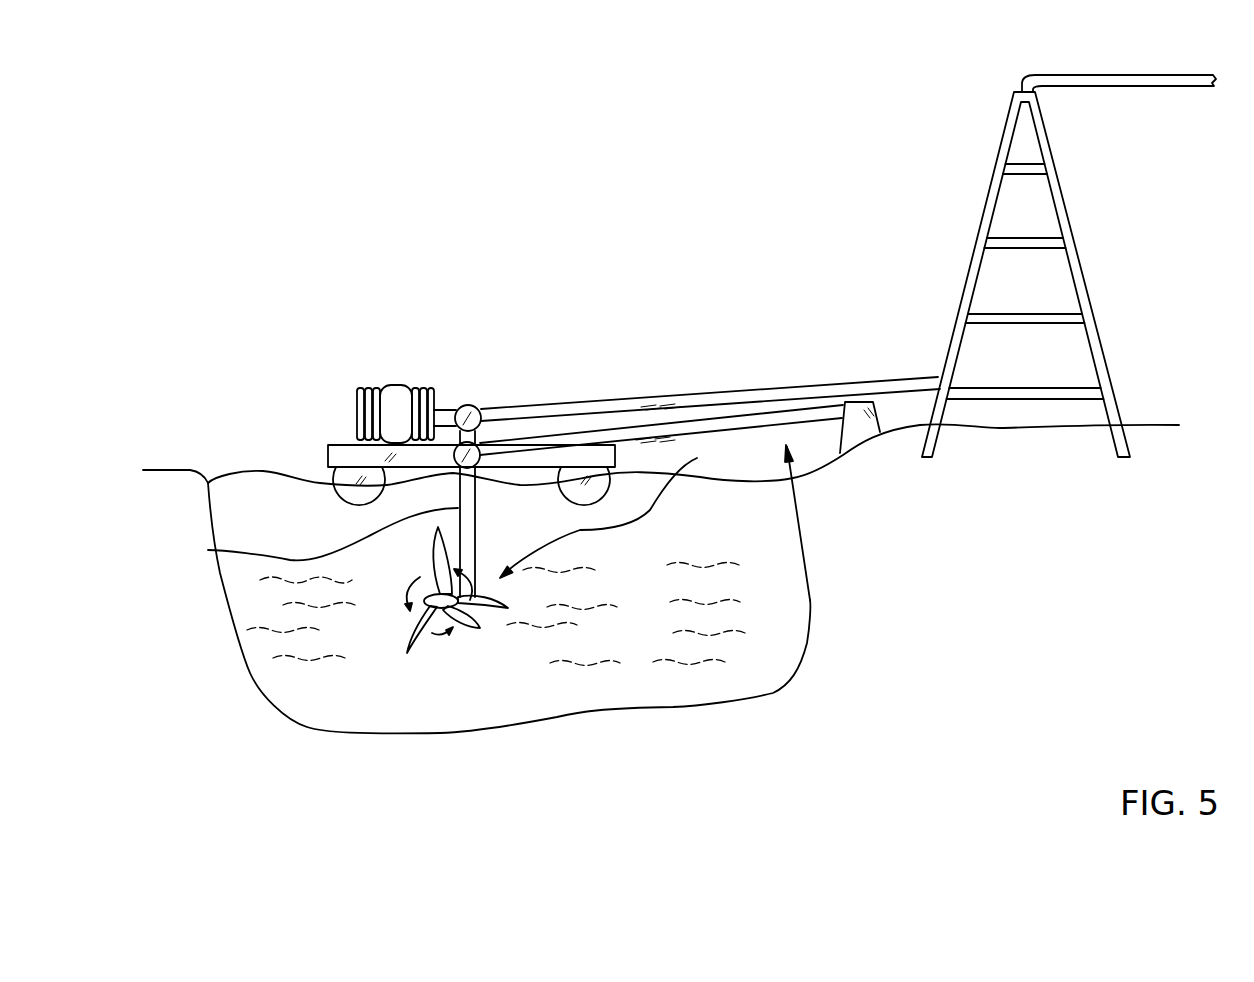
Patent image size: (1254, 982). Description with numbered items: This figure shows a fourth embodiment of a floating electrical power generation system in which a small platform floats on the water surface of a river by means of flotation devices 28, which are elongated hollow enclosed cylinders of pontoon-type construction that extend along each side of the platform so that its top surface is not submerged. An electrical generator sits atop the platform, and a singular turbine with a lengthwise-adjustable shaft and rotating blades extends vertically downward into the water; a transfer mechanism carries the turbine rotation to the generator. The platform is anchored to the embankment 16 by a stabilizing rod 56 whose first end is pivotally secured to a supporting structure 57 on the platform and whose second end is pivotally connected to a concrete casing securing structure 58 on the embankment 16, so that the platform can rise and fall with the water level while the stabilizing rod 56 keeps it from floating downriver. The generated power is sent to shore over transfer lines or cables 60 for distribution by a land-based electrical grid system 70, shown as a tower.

The embankment 16 is at (828, 465).
The flotation devices 28 is at (327, 482).
The stabilizing rod 56 is at (697, 421).
The supporting structure 57 is at (485, 410).
The securing structure 58 is at (867, 430).
The transfer lines 60 is at (603, 400).
The electrical grid system 70 is at (982, 215).